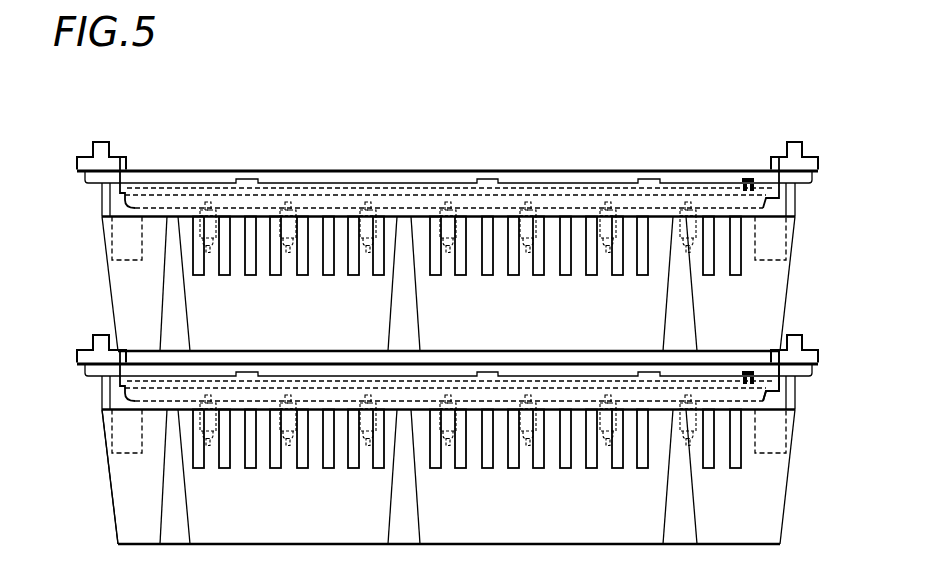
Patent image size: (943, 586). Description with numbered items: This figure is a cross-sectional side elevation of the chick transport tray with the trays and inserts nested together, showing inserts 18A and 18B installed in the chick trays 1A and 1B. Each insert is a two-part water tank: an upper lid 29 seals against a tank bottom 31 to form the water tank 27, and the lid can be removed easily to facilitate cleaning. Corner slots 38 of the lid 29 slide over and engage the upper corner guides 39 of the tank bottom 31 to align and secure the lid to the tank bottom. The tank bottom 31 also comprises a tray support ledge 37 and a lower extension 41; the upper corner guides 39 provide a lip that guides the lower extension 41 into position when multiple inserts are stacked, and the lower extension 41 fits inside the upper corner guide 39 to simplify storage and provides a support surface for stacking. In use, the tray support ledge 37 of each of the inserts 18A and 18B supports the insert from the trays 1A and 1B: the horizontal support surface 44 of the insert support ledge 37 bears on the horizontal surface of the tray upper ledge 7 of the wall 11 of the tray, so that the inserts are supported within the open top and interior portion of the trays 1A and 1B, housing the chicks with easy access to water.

The tray 1A is at (405, 267).
The tray 1B is at (406, 460).
The insert 18A is at (444, 251).
The insert 18B is at (60, 356).
The tray upper ledge 7 is at (85, 177).
The wall 11 is at (100, 448).
The water tank 27 is at (422, 200).
The upper lid 29 is at (653, 170).
The tank bottom 31 is at (312, 208).
The tray support ledge 37 is at (819, 168).
The corner slots 38 is at (803, 157).
The upper corner guide 39 is at (791, 141).
The lower extension 41 is at (122, 262).
The horizontal support surface 44 is at (806, 181).